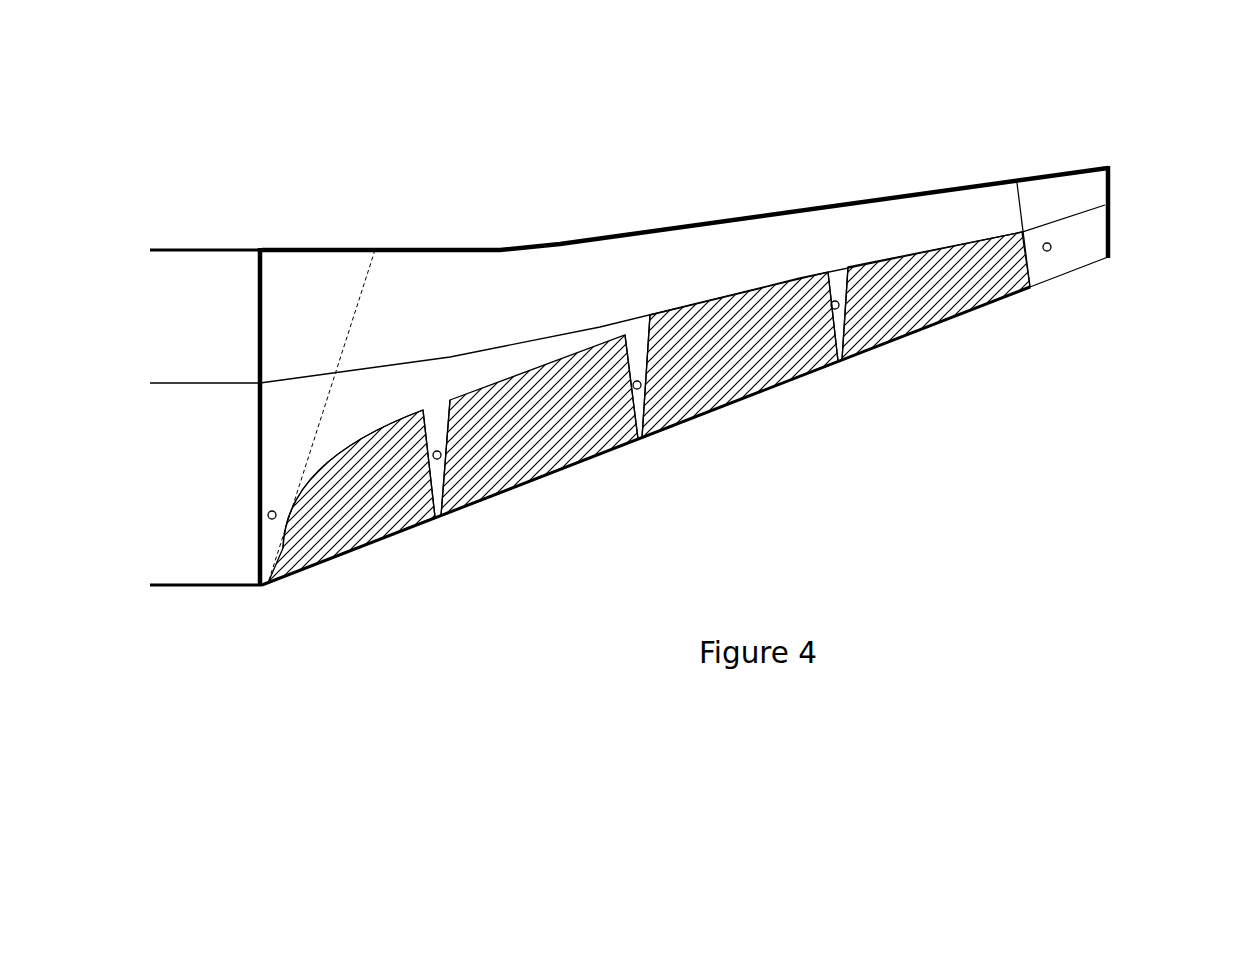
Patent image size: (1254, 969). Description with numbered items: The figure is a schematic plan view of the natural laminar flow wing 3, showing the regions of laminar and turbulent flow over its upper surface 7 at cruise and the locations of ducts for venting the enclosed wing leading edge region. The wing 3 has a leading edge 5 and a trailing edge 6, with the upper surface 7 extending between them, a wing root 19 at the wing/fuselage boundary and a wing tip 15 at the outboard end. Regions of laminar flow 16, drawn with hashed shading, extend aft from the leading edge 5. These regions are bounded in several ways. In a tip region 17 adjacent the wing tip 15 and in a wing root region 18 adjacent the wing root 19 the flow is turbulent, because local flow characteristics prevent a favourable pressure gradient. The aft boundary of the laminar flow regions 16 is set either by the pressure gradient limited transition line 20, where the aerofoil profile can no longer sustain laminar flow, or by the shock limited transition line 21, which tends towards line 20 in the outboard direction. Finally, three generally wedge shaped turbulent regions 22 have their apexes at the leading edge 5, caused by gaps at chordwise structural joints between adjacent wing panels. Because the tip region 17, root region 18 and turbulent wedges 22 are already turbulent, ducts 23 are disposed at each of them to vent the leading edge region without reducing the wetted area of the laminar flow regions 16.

The wing 3 is at (331, 172).
The leading edge 5 is at (763, 406).
The trailing edge 6 is at (844, 184).
The upper surface 7 is at (425, 270).
The wing tip 15 is at (1110, 243).
The regions of laminar flow 16 is at (535, 438).
The tip region 17 is at (1030, 281).
The wing root region 18 is at (270, 553).
The wing root 19 is at (258, 438).
The pressure gradient limited transition line 20 is at (326, 445).
The shock limited transition line 21 is at (925, 241).
The turbulent wedge shaped regions 22 is at (796, 275).
The ducts 23 is at (267, 516).